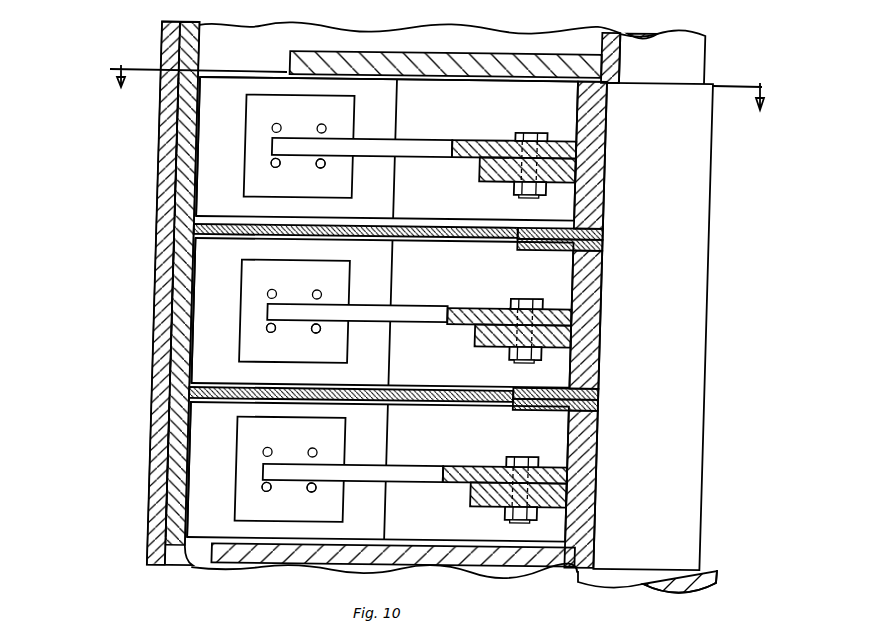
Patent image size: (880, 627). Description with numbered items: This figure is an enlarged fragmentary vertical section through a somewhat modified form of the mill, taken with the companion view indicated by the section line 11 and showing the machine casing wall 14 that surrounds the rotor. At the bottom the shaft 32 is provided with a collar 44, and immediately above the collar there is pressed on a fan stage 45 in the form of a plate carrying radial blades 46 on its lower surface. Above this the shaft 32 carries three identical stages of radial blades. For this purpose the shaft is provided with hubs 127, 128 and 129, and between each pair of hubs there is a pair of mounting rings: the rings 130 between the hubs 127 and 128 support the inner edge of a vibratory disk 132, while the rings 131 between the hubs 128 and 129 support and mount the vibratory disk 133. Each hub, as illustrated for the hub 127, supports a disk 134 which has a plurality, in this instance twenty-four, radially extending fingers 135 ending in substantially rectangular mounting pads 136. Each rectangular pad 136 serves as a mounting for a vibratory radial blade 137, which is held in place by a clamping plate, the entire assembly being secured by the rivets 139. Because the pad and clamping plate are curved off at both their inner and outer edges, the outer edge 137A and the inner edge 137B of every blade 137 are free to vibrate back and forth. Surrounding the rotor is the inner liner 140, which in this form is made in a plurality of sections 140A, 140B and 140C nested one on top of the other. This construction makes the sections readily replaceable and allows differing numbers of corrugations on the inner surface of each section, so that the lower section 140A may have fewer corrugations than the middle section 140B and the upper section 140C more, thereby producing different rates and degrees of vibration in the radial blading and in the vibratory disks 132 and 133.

The section line 11- 11 is at (438, 77).
The side wall 14 is at (158, 262).
The shaft 32 is at (628, 578).
The collar 44 is at (584, 573).
The fan stage 45 is at (230, 548).
The radial blades 46 is at (272, 562).
The hub 127 is at (593, 447).
The hub 128 is at (583, 316).
The hub 129 is at (597, 173).
The mounting rings 130 is at (518, 392).
The mounting rings 131 is at (520, 230).
The vibratory disk 132 is at (192, 390).
The vibratory disk 133 is at (197, 228).
The disk 134 is at (475, 147).
The radially extending fingers 135 is at (423, 147).
The mounting pad 136 is at (348, 183).
The vibratory radial blade 137 is at (207, 200).
The outer edge 137A is at (200, 117).
The inner edge 137B is at (397, 97).
The rivets 139 is at (281, 166).
The inner liner 140 is at (166, 536).
The lower liner section 140A is at (178, 425).
The middle liner section 140B is at (178, 325).
The upper liner section 140C is at (182, 168).